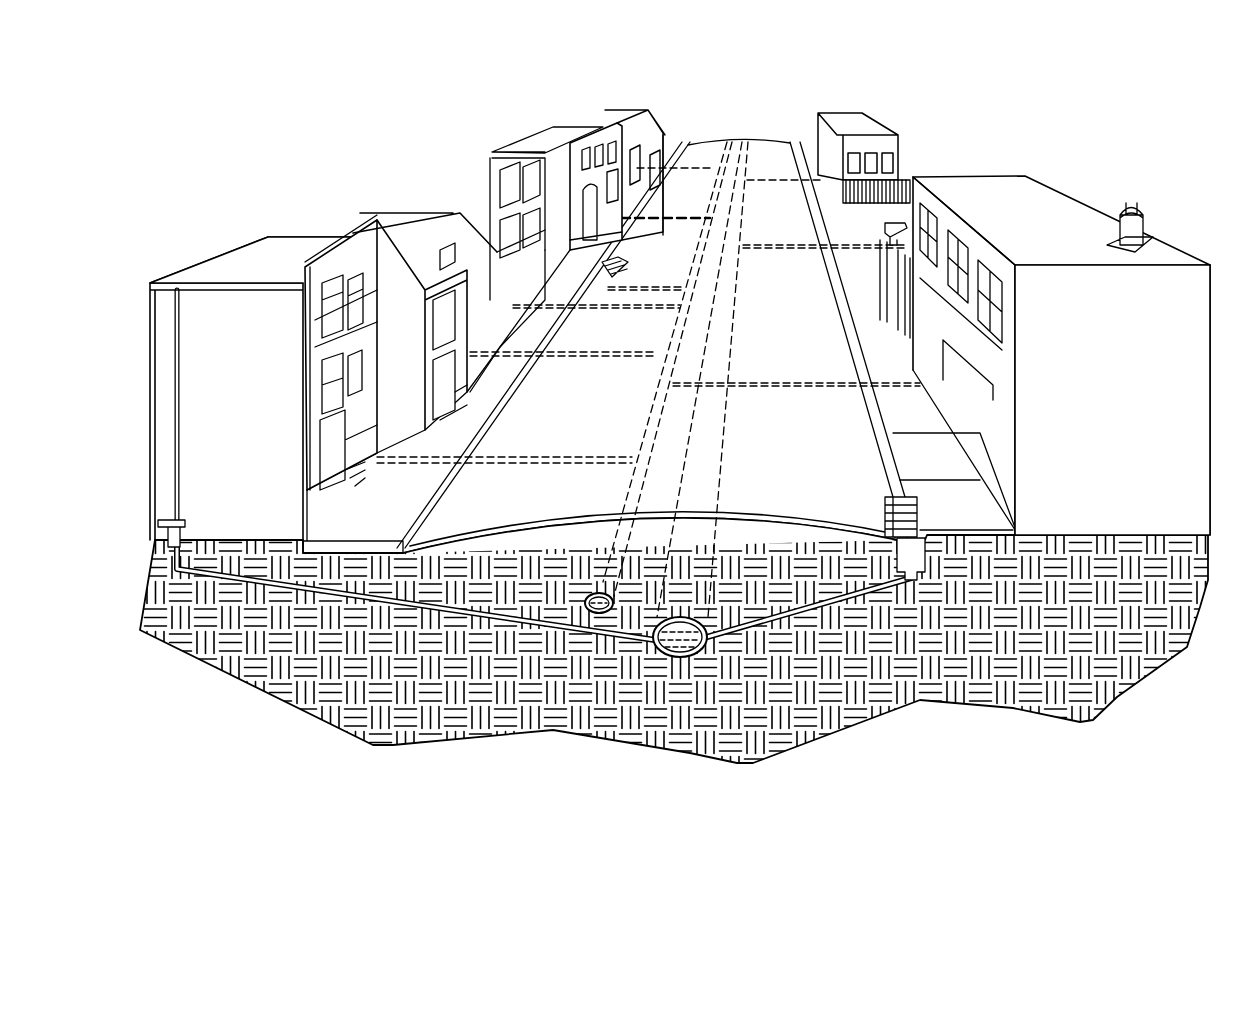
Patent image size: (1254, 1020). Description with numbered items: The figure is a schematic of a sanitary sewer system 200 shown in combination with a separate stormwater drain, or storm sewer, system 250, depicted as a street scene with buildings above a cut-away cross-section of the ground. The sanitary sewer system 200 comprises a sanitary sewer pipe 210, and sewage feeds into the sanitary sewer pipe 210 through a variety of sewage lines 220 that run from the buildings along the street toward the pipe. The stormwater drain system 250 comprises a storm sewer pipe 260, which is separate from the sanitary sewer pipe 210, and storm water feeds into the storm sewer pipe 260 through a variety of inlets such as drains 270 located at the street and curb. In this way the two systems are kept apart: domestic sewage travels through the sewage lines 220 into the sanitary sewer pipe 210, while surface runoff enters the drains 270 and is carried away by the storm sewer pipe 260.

The sanitary sewer system 200 is at (366, 174).
The sanitary sewer pipe 210 is at (627, 500).
The sewage lines 220 is at (767, 388).
The stormwater drain system 250 is at (938, 142).
The storm sewer pipe 260 is at (873, 230).
The drains 270 is at (619, 257).